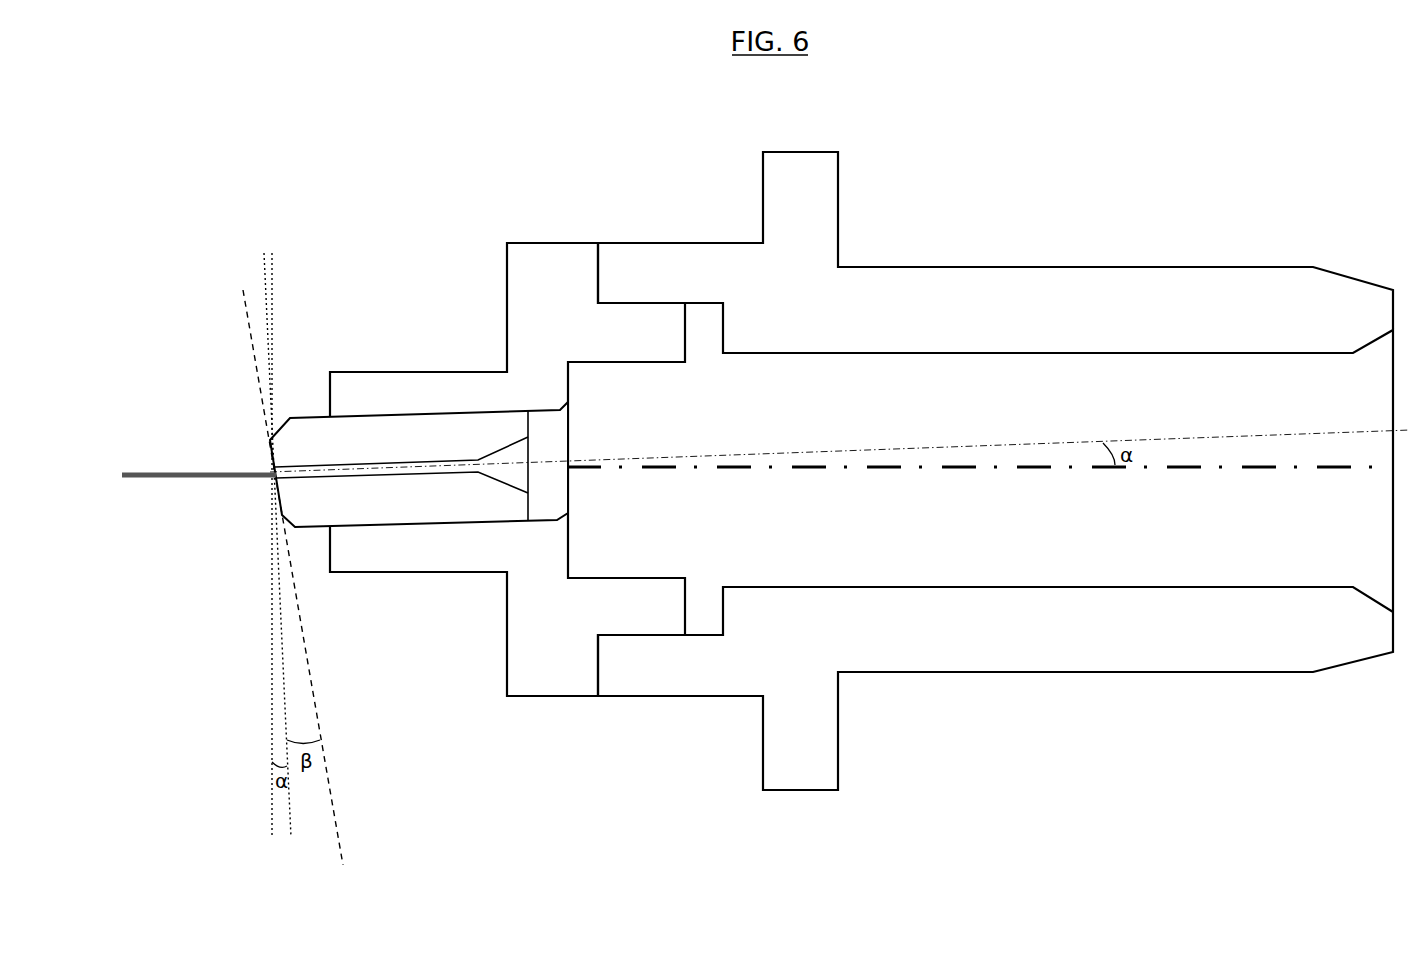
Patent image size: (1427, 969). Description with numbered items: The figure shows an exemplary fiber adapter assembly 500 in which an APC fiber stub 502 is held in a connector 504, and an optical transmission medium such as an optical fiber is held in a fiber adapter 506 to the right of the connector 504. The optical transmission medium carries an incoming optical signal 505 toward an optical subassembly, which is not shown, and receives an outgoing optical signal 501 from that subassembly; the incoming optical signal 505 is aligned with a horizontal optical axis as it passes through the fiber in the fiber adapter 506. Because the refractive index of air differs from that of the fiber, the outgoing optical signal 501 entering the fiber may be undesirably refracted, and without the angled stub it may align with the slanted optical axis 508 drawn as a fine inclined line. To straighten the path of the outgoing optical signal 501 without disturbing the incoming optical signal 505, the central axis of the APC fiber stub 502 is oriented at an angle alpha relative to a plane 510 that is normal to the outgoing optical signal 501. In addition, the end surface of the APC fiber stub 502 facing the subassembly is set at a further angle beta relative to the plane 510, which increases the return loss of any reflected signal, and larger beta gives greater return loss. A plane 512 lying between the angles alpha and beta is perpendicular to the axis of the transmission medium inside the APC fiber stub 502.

The fiber adapter assembly 500 is at (510, 170).
The outgoing optical signal 501 is at (230, 467).
The APC fiber stub 502 is at (420, 413).
The connector 504 is at (547, 242).
The incoming optical signal 505 is at (1257, 470).
The fiber adapter 506 is at (1038, 268).
The slanted optical axis 508 is at (978, 447).
The plane normal to the outgoing optical signal 510 is at (273, 667).
The plane between the angles alpha and beta 512 is at (265, 267).